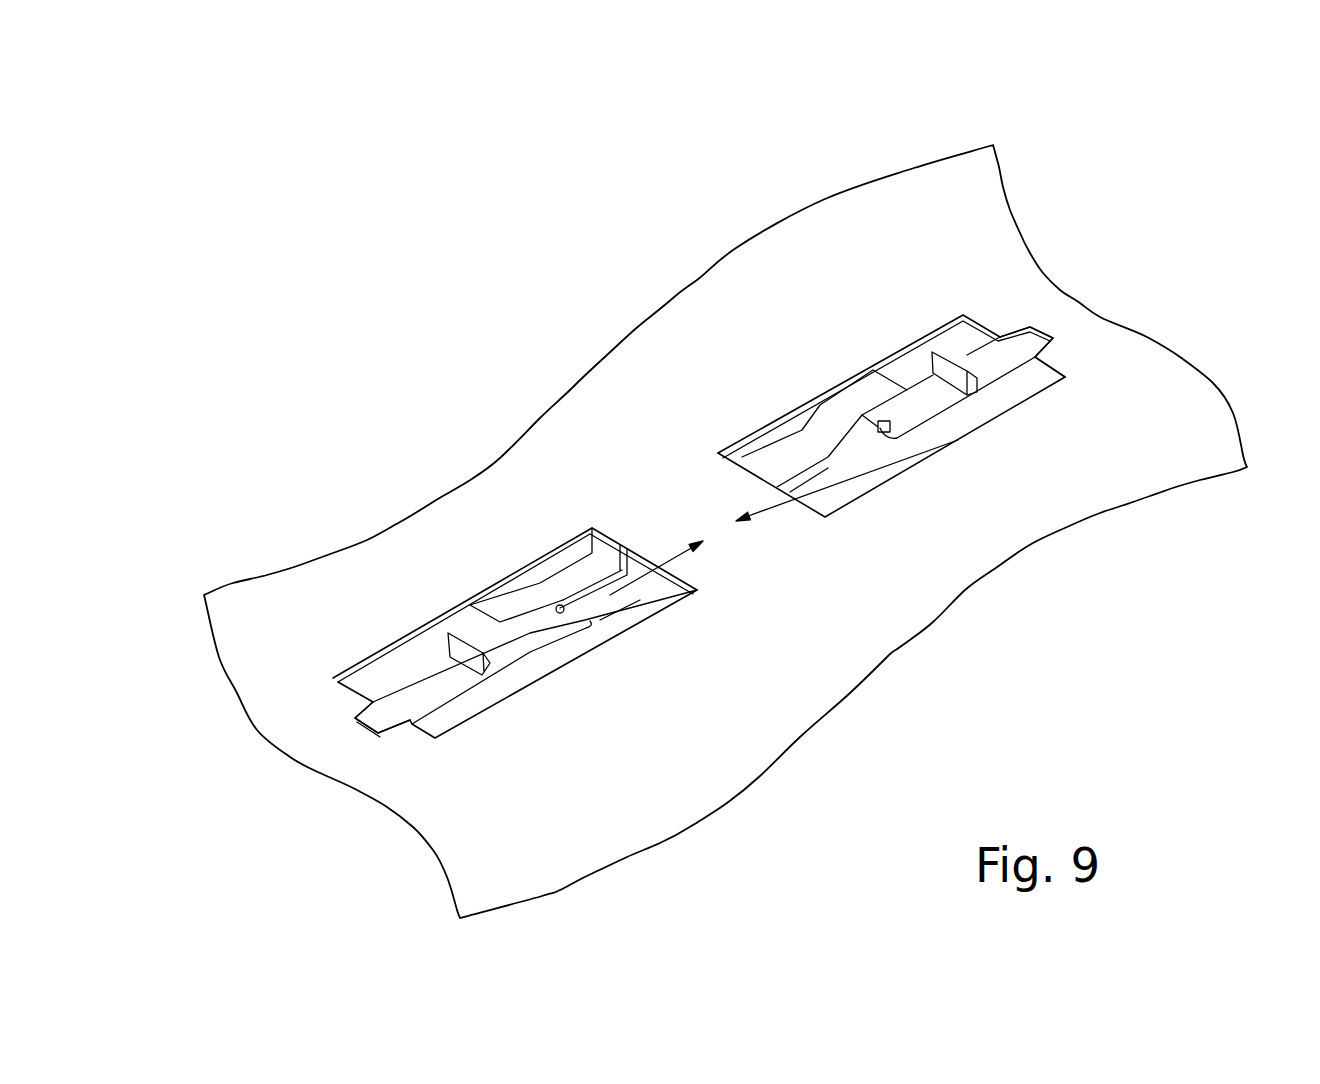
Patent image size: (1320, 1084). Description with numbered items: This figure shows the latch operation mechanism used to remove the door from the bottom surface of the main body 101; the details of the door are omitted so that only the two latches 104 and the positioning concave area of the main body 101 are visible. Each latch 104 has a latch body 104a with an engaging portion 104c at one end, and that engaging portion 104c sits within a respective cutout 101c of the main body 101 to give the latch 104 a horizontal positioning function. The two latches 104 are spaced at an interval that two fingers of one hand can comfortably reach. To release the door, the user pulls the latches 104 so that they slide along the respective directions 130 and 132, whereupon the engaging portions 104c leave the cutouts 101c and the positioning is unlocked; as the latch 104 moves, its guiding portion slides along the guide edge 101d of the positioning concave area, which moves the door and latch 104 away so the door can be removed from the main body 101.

The main body 101 is at (815, 655).
The cutout 101c is at (1053, 330).
The guide edge 101d is at (866, 462).
The latch 104 is at (983, 367).
The latch body 104a is at (945, 370).
The engaging portion 104c is at (1040, 327).
The direction 130 is at (762, 498).
The direction 132 is at (664, 547).